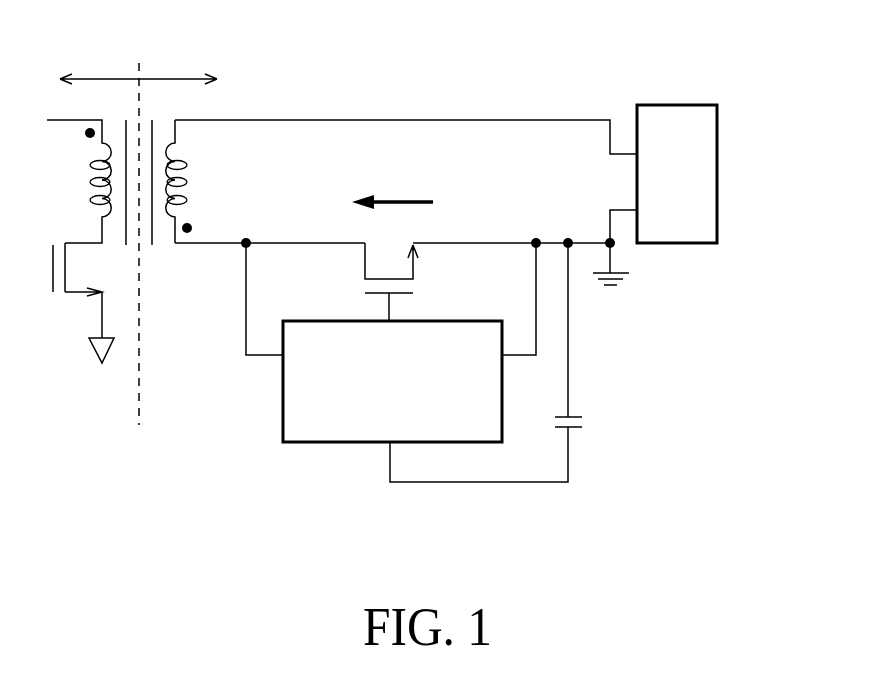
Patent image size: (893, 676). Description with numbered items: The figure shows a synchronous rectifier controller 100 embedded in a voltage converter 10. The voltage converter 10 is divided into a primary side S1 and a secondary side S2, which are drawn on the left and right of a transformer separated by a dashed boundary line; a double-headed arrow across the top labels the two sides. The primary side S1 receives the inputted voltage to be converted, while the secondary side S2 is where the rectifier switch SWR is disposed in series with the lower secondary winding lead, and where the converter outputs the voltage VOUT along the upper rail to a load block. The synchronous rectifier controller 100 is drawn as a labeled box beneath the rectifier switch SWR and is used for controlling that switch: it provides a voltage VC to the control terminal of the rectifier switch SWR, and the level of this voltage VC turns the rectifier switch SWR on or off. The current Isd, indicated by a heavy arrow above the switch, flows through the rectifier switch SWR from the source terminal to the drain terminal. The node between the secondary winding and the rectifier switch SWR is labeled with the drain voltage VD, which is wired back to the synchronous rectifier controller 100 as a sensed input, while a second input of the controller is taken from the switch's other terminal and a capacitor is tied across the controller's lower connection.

The voltage converter 10 is at (777, 110).
The synchronous rectifier controller 100 is at (346, 443).
The primary side S1 is at (70, 213).
The secondary side S2 is at (208, 153).
The rectifier switch SWR is at (383, 253).
The voltage VOUT is at (406, 120).
The drain voltage VD is at (270, 229).
The voltage VC is at (413, 306).
The current Isd is at (392, 186).